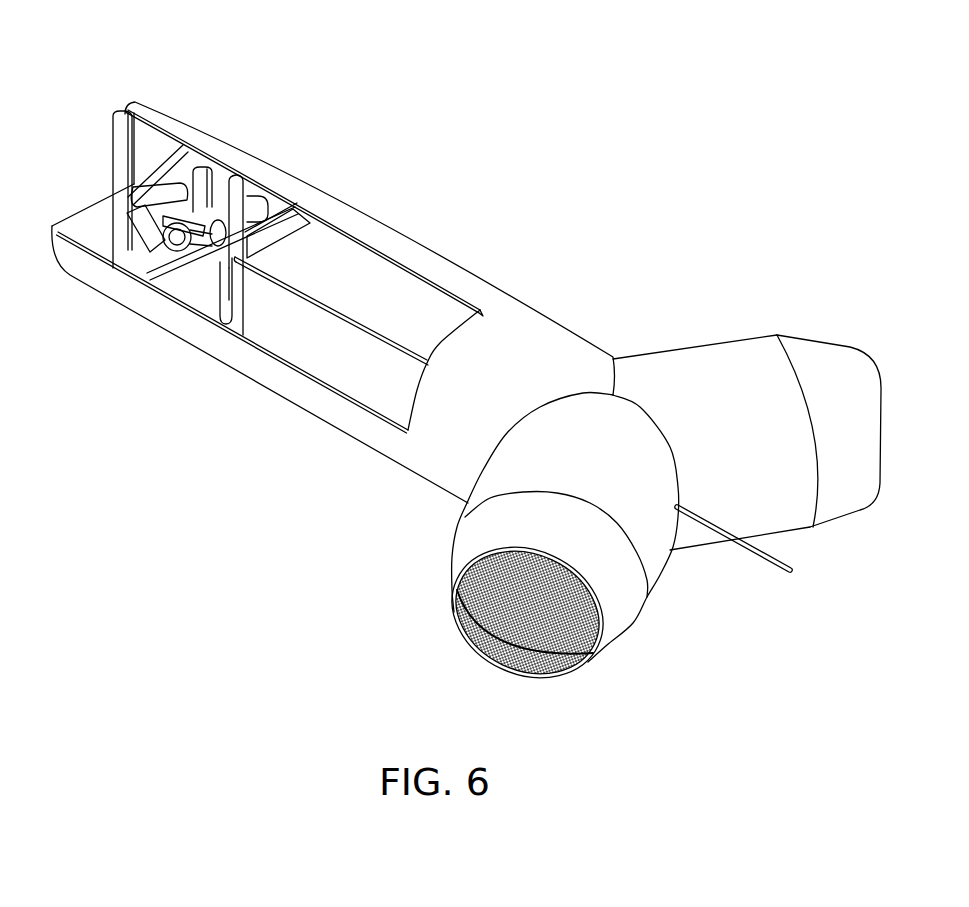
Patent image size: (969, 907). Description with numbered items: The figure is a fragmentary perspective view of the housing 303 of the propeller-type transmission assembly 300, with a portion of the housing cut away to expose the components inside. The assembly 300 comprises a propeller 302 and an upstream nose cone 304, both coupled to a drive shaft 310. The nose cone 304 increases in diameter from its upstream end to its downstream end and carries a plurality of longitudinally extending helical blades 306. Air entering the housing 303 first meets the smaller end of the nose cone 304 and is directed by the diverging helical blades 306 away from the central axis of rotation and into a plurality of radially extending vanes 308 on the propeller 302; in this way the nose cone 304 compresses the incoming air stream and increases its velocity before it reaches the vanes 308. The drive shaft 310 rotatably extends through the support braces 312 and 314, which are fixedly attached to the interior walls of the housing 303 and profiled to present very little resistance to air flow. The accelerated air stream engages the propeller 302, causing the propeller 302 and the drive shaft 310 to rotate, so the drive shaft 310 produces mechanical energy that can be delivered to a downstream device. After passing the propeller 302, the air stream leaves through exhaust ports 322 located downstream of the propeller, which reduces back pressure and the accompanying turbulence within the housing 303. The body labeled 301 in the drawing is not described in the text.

The propeller-type transmission assembly 300 is at (401, 94).
The housing body 301 is at (141, 103).
The propeller 302 is at (229, 275).
The housing 303 is at (430, 270).
The nose cone 304 is at (127, 193).
The helical blades 306 is at (140, 238).
The vanes 308 is at (205, 175).
The drive shaft 310 is at (340, 313).
The support brace 312 is at (114, 134).
The support brace 314 is at (293, 220).
The exhaust ports 322 is at (468, 597).